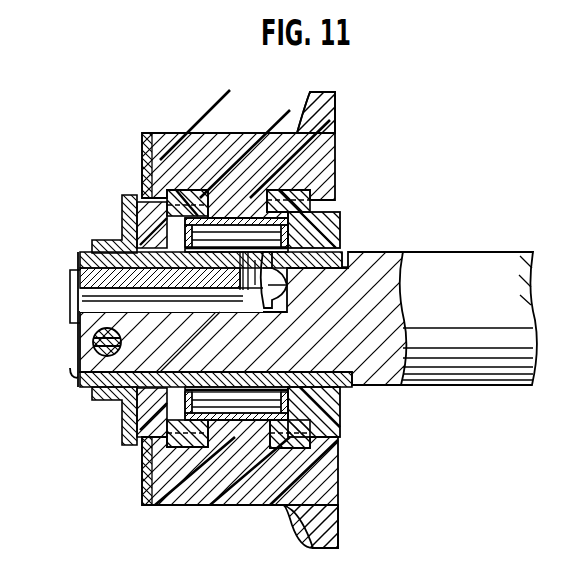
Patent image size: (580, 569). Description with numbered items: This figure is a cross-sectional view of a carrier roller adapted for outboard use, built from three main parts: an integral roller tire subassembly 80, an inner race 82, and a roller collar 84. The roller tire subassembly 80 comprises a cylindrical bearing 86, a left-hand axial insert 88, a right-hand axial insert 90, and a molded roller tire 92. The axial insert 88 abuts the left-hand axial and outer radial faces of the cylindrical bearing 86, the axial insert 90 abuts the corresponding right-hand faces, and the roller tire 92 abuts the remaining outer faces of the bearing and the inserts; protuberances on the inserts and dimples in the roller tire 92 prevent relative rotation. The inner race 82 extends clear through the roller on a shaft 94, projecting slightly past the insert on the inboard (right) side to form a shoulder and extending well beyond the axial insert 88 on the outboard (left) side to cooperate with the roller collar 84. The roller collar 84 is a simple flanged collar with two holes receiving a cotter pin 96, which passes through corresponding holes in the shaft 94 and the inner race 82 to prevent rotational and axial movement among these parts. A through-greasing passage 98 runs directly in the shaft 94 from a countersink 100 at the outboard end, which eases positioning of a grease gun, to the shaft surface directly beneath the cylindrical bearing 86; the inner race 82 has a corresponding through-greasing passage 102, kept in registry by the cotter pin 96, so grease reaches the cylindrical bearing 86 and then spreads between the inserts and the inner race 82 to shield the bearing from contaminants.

The roller tire subassembly 80 is at (214, 132).
The inner race 82 is at (352, 253).
The roller collar 84 is at (122, 212).
The cylindrical bearing 86 is at (340, 230).
The left-hand axial insert 88 is at (142, 174).
The right-hand axial insert 90 is at (323, 198).
The roller tire 92 is at (335, 125).
The shaft 94 is at (75, 356).
The cotter pin 96 is at (121, 350).
The through-greasing passage 98 is at (190, 328).
The countersink 100 is at (70, 286).
The through-greasing passage 102 is at (280, 306).